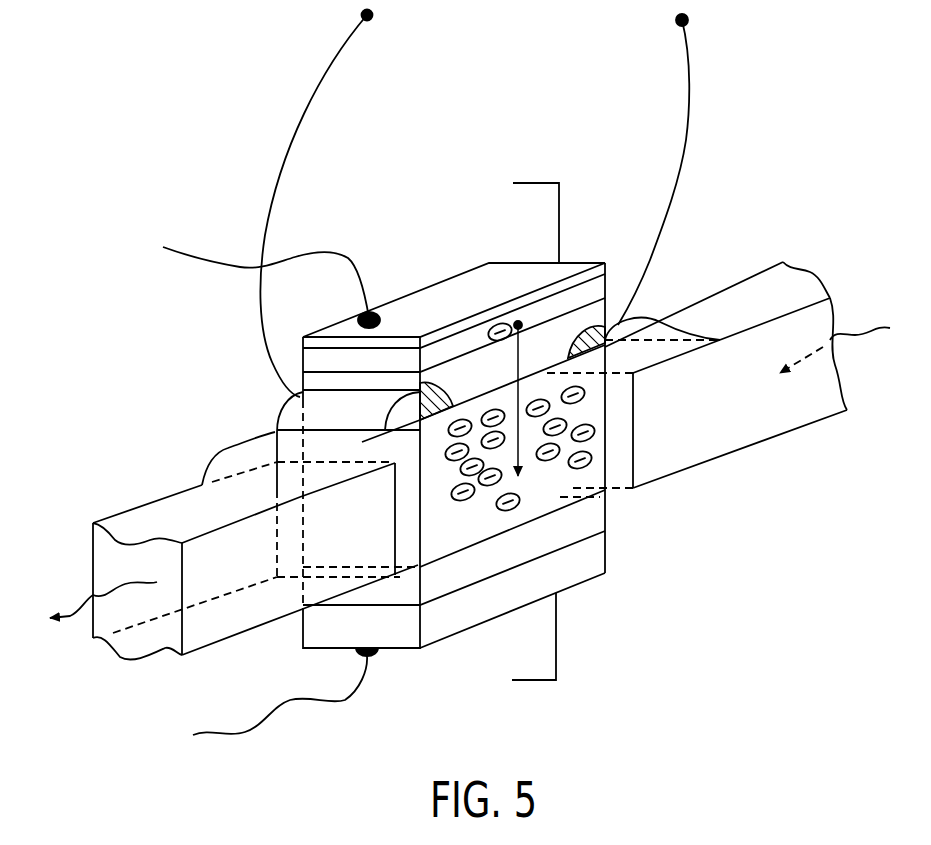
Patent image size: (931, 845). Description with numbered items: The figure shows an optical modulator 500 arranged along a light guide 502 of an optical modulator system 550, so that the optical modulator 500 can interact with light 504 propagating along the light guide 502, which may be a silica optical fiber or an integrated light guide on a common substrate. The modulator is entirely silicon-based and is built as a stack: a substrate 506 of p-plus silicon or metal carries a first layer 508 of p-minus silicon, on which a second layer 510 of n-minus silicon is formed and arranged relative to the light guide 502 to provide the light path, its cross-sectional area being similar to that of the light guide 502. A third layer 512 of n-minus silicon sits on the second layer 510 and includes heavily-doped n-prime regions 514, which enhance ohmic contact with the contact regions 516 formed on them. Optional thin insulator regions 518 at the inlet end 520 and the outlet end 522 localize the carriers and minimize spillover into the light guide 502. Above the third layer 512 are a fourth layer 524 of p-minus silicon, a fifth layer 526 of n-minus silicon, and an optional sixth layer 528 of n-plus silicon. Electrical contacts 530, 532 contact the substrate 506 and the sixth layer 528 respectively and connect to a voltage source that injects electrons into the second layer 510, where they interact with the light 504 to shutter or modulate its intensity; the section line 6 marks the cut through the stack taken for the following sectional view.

The electrochemical cell assembly 500 is at (200, 338).
The fluid channel 502 is at (158, 648).
The fluid flow direction 504 is at (74, 618).
The base layer 506 is at (596, 558).
The second layer 508 is at (596, 520).
The electrolyte layer 510 is at (478, 537).
The electrode layer 512 is at (483, 393).
The electrical contact 514 is at (418, 392).
The inner seal 516 is at (288, 420).
The outer seal 518 is at (218, 468).
The outlet channel portion 520 is at (605, 437).
The inlet channel portion 522 is at (418, 529).
The electrode layer 524 is at (395, 371).
The conductive layer 526 is at (454, 335).
The top cover layer 528 is at (585, 266).
The lower electrical lead 530 is at (375, 656).
The upper electrical lead 532 is at (372, 315).
The channel system 550 is at (747, 158).
The section line 6- 6 is at (527, 433).